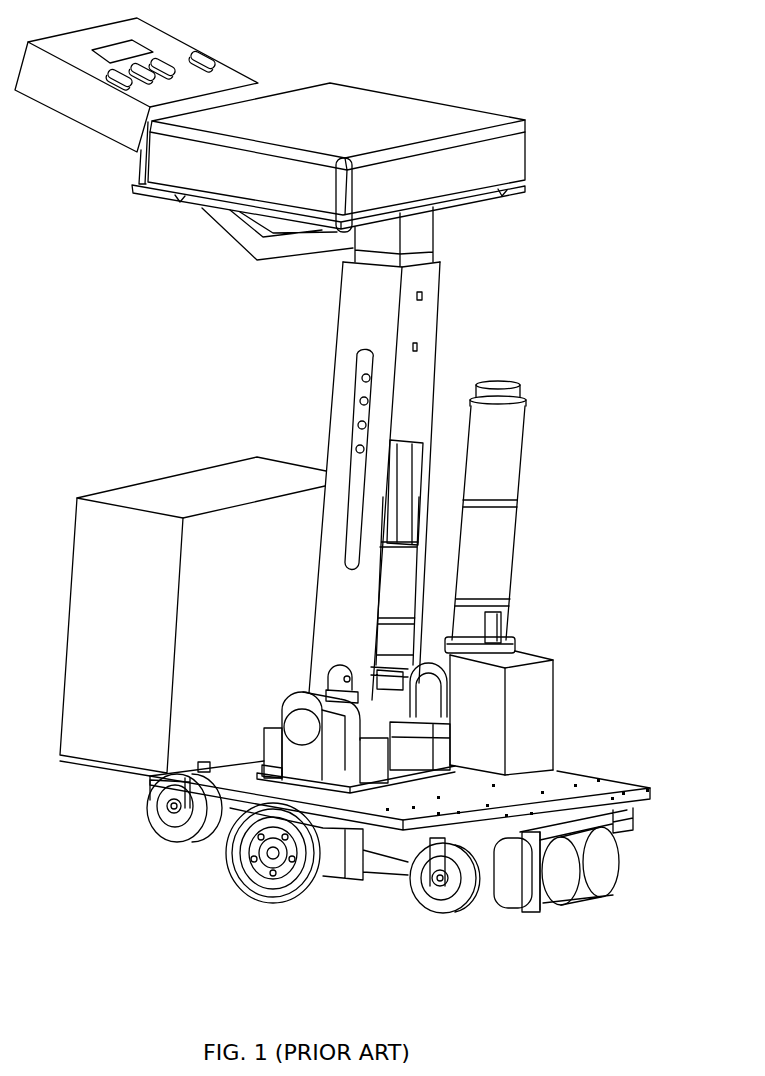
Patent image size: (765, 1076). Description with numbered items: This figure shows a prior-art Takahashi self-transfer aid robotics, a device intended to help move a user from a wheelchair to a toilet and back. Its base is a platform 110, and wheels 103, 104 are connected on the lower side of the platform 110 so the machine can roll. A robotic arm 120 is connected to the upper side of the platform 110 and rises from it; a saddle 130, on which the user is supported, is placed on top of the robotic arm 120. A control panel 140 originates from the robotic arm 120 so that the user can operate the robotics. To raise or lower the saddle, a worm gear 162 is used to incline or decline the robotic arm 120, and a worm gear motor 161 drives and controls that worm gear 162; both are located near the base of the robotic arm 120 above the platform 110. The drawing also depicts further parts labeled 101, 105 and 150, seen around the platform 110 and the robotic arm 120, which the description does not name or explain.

The caster wheel 101 is at (148, 815).
The wheel 103 is at (240, 883).
The wheel 104 is at (617, 848).
The caster wheel 105 is at (430, 908).
The platform 110 is at (630, 778).
The robotic arm 120 is at (438, 337).
The saddle 130 is at (528, 122).
The control panel 140 is at (186, 44).
The battery box 150 is at (168, 492).
The worm gear motor 161 is at (522, 453).
The worm gear 162 is at (550, 703).